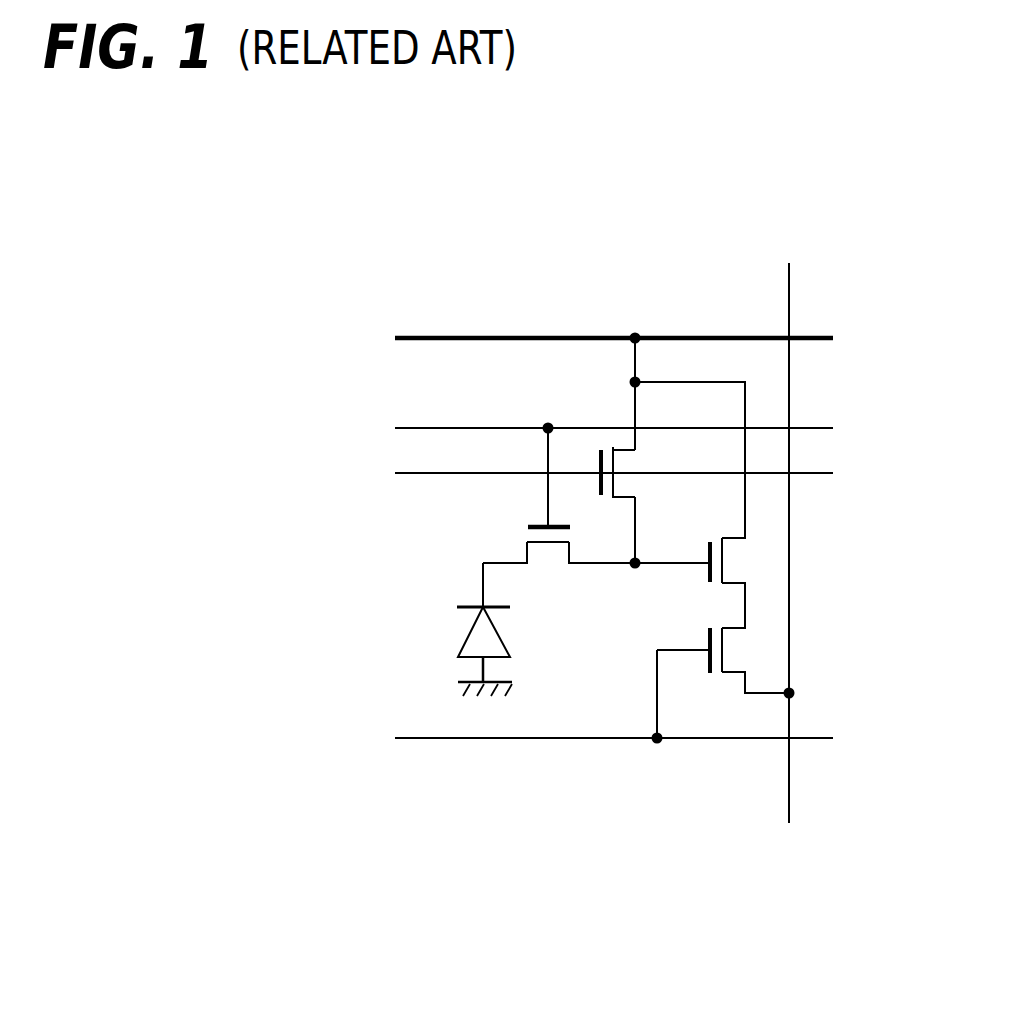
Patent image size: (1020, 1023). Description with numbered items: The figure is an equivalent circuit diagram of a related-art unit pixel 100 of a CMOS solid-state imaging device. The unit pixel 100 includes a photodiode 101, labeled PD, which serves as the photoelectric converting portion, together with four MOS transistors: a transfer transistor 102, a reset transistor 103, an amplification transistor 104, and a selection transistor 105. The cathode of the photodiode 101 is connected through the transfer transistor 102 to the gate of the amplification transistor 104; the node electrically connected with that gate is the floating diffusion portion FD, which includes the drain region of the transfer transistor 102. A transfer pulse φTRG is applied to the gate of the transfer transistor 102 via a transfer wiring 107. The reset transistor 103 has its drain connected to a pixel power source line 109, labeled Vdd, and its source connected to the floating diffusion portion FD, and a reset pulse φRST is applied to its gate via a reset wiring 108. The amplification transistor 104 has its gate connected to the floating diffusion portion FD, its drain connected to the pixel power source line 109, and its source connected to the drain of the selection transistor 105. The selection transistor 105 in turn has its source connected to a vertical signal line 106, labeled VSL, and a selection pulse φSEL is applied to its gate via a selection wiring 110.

The unit pixel 100 is at (480, 306).
The photodiode 101 is at (497, 628).
The transfer transistor 102 is at (523, 548).
The reset transistor 103 is at (628, 483).
The amplification transistor 104 is at (733, 563).
The selection transistor 105 is at (732, 647).
The vertical signal line 106 is at (790, 287).
The transfer wiring 107 is at (440, 427).
The reset wiring 108 is at (423, 475).
The pixel power source line 109 is at (557, 336).
The selection wiring 110 is at (513, 741).